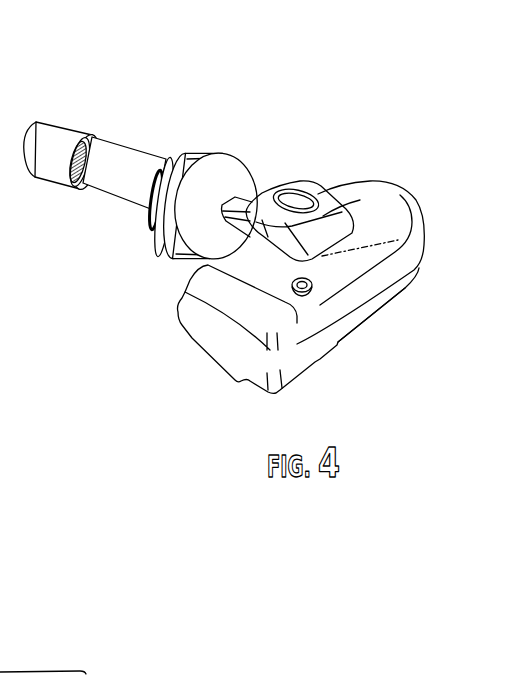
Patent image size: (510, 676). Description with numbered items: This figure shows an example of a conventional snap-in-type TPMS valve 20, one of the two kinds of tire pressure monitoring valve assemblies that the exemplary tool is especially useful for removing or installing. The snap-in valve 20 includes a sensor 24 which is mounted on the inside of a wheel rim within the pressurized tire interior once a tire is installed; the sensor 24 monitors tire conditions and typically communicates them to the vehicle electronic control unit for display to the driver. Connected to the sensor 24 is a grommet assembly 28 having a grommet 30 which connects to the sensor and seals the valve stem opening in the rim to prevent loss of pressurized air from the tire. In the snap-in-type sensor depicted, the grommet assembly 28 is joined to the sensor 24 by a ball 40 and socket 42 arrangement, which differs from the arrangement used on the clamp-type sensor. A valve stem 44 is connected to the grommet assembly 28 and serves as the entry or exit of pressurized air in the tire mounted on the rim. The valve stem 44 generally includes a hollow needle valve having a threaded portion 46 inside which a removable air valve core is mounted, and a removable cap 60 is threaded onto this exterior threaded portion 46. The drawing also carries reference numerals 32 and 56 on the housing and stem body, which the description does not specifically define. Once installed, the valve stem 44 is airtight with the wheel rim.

The snap-in-type TPMS valve 20 is at (231, 236).
The sensor 24 is at (200, 364).
The grommet assembly 28 is at (103, 190).
The grommet 30 is at (215, 153).
The housing upper portion 32 is at (331, 225).
The ball 40 is at (302, 191).
The socket 42 is at (322, 216).
The valve stem 44 is at (158, 178).
The threaded portion 46 is at (76, 190).
The stem body 56 is at (128, 138).
The removable cap 60 is at (60, 123).